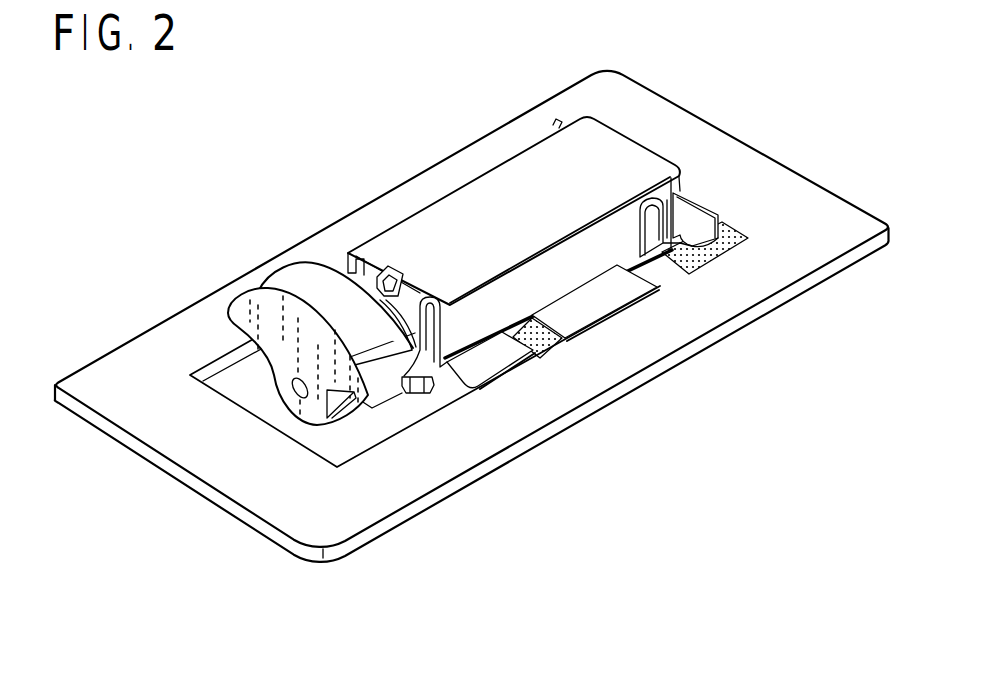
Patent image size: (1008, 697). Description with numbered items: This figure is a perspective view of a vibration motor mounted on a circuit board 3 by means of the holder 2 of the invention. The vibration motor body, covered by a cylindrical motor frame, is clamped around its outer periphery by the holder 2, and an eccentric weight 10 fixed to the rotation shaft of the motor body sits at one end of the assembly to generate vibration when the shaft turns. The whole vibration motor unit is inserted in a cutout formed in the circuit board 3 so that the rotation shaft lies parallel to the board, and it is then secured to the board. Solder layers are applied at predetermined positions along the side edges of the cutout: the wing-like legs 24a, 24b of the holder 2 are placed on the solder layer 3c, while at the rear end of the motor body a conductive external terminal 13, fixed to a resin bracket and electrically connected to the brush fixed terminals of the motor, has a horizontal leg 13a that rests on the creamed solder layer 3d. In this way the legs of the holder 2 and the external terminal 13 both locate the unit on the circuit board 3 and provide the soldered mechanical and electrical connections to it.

The holder 2 is at (474, 210).
The circuit board 3 is at (657, 103).
The solder layer 3c is at (560, 352).
The creamed solder layer 3d is at (742, 250).
The eccentric weight 10 is at (293, 284).
The external terminal 13 is at (702, 217).
The horizontal leg 13a is at (715, 247).
The wing-like leg 24a is at (486, 365).
The wing-like leg 24b is at (590, 303).